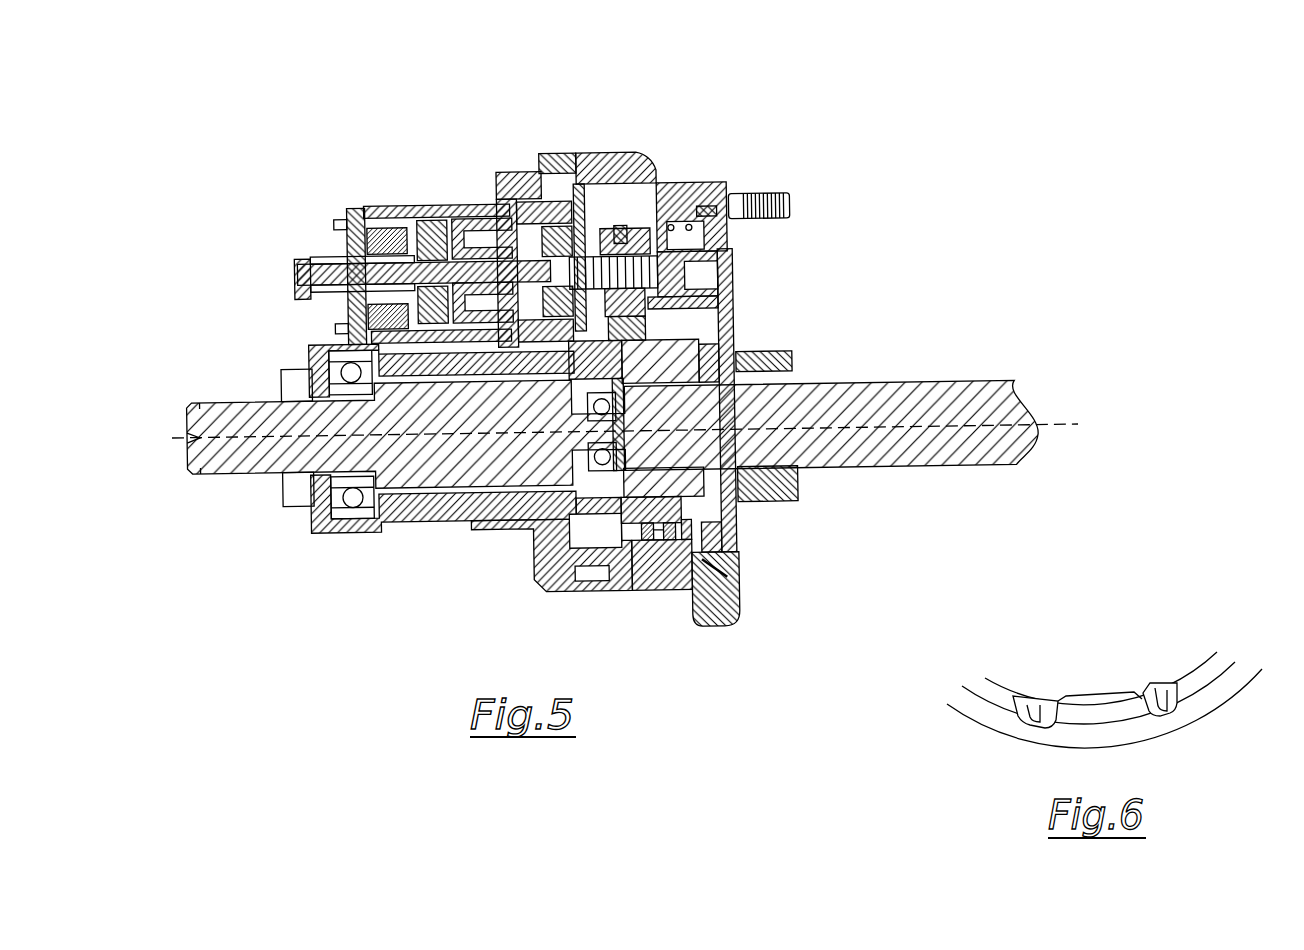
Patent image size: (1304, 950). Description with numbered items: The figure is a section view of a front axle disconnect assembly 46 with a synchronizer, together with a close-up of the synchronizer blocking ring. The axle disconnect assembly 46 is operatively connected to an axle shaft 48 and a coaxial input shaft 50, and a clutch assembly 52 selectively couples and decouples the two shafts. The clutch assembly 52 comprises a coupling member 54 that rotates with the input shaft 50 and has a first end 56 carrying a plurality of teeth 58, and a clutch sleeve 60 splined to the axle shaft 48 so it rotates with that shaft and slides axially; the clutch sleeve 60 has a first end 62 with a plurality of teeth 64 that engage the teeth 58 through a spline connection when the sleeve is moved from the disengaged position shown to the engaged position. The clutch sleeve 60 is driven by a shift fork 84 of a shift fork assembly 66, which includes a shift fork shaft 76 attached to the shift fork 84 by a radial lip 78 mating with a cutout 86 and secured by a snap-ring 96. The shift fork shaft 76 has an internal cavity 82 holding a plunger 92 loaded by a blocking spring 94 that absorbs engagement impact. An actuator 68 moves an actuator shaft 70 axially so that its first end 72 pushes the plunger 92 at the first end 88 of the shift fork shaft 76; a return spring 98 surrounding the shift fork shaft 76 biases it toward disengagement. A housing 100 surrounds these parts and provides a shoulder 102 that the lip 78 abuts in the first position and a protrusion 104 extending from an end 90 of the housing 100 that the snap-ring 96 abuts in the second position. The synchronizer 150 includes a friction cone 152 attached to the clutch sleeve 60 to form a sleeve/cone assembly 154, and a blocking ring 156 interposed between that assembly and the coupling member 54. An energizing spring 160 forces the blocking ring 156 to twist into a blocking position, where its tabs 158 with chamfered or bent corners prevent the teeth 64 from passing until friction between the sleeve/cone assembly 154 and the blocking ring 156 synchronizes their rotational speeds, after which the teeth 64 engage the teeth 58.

In FIG. 5, the axle disconnect assembly 46 is at (932, 90).
In FIG. 5, the axle shaft 48 is at (201, 470).
In FIG. 5, the input shaft 50 is at (900, 402).
In FIG. 5, the clutch assembly 52 is at (615, 527).
In FIG. 5, the coupling member 54 is at (736, 516).
In FIG. 5, the first end 56 is at (641, 361).
In FIG. 5, the plurality of teeth 58 is at (640, 325).
In FIG. 5, the clutch sleeve 60 is at (652, 539).
In FIG. 6, the clutch sleeve 60 is at (1013, 700).
In FIG. 5, the first end 62 is at (685, 524).
In FIG. 5, the plurality of teeth 64 is at (668, 539).
In FIG. 6, the plurality of teeth 64 is at (1025, 713).
In FIG. 5, the shift fork assembly 66 is at (738, 198).
In FIG. 5, the actuator 68 is at (366, 203).
In FIG. 5, the actuator shaft 70 is at (447, 272).
In FIG. 5, the first end 72 is at (545, 250).
In FIG. 5, the shift fork shaft 76 is at (612, 240).
In FIG. 5, the lip 78 is at (590, 168).
In FIG. 5, the internal cavity 82 is at (557, 268).
In FIG. 5, the shift fork 84 is at (700, 292).
In FIG. 5, the cutout 86 is at (582, 330).
In FIG. 5, the first end 88 is at (530, 245).
In FIG. 5, the end 90 is at (715, 279).
In FIG. 5, the plunger 92 is at (535, 290).
In FIG. 5, the blocking spring 94 is at (670, 238).
In FIG. 5, the snap-ring 96 is at (640, 235).
In FIG. 5, the return spring 98 is at (690, 238).
In FIG. 5, the housing 100 is at (366, 537).
In FIG. 5, the shoulder 102 is at (555, 285).
In FIG. 5, the protrusion 104 is at (710, 207).
In FIG. 5, the synchronizer 150 is at (720, 550).
In FIG. 5, the friction cone 152 is at (640, 348).
In FIG. 5, the sleeve/cone assembly 154 is at (712, 568).
In FIG. 5, the blocking ring 156 is at (695, 556).
In FIG. 6, the blocking ring 156 is at (1145, 736).
In FIG. 6, the tab 158 is at (1113, 713).
In FIG. 5, the energizing spring 160 is at (697, 578).